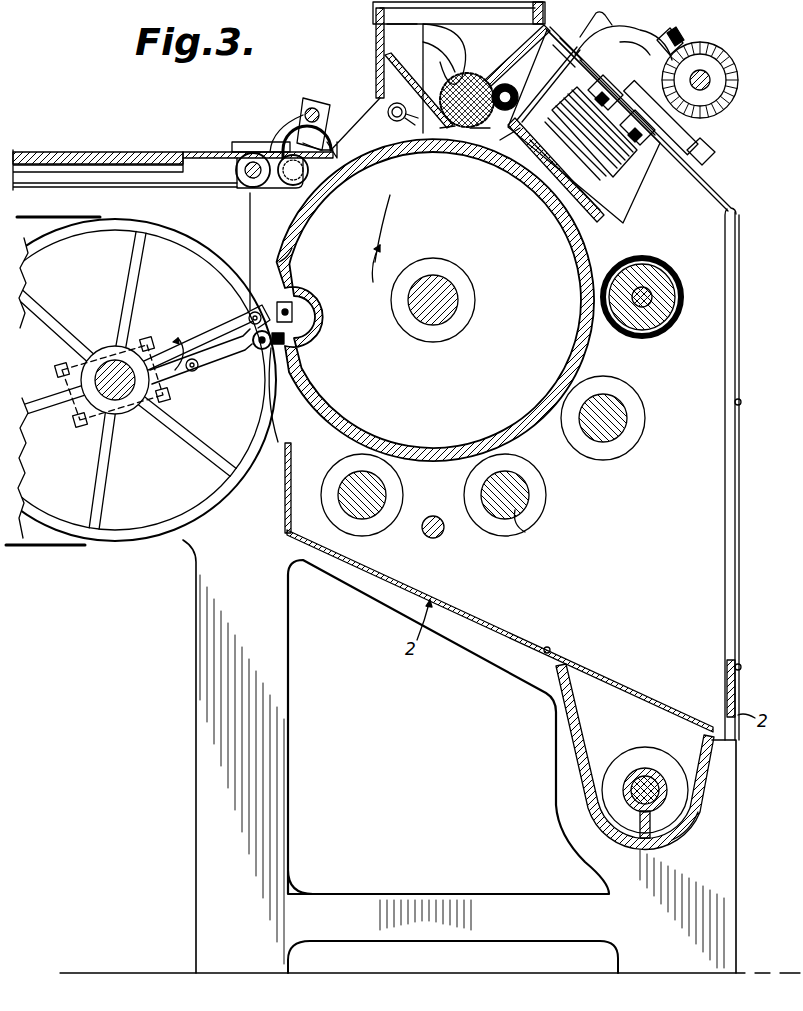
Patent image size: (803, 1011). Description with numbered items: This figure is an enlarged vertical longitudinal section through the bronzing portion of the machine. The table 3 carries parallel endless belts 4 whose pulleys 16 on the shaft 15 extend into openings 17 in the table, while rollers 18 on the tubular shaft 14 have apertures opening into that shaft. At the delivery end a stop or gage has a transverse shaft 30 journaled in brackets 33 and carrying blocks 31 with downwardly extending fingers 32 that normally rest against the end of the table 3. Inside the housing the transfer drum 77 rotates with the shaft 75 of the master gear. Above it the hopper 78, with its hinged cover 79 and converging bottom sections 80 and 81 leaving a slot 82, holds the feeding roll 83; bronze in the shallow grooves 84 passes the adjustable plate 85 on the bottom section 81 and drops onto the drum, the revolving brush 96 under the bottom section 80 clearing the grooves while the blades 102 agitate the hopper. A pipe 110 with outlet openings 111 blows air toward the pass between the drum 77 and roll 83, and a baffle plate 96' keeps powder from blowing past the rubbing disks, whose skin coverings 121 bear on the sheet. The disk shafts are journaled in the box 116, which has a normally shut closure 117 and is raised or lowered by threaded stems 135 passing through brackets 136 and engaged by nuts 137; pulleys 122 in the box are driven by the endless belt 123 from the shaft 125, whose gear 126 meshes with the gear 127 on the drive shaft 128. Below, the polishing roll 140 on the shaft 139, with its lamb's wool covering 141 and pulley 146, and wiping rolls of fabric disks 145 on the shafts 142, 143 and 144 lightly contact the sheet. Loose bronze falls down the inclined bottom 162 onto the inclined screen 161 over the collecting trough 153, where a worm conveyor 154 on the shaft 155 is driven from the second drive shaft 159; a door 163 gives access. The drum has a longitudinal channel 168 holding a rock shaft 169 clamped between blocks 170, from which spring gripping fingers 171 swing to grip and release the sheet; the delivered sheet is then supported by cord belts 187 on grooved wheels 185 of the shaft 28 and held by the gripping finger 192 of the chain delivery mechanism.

The table 3 is at (50, 152).
The endless belts 4 is at (88, 187).
The openings 17 is at (235, 148).
The tubular shaft 14 is at (285, 156).
The brackets 33 is at (285, 133).
The transverse shaft 30 is at (308, 110).
The blocks 31 is at (320, 97).
The fingers 32 is at (340, 128).
The shaft 15 is at (240, 172).
The pulleys 16 is at (250, 182).
The rollers 18 is at (285, 188).
The endless belts 187 is at (40, 217).
The shaft 28 is at (122, 350).
The gripping finger 192 is at (252, 340).
The wheels 185 is at (205, 520).
The spring gripping finger 171 is at (283, 392).
The blocks 170 is at (300, 278).
The rock shaft 169 is at (300, 305).
The longitudinal channel 168 is at (310, 330).
The pipe 110 is at (390, 150).
The outlet openings 111 is at (400, 125).
The feeding roll 83 is at (452, 140).
The grooves 84 is at (480, 140).
The baffle plate 96' is at (499, 170).
The coverings 121 is at (575, 200).
The hinged cover 79 is at (373, 12).
The plate 85 is at (376, 47).
The bottom section 81 is at (388, 70).
The slot 82 is at (478, 72).
The hopper 78 is at (517, 52).
The blades 102 is at (426, 78).
The bottom section 80 is at (560, 52).
The revolving brush 96 is at (515, 84).
The endless belt 123 is at (594, 87).
The closure 117 is at (600, 45).
The brackets 136 is at (645, 30).
The nuts 137 is at (675, 30).
The threaded stems 135 is at (685, 42).
The drive shaft 128 is at (708, 72).
The gear 127 is at (740, 72).
The gear 126 is at (705, 124).
The shaft 125 is at (716, 156).
The pulleys 122 is at (640, 178).
The box 116 is at (640, 200).
The shaft 139 is at (672, 280).
The polishing roll 140 is at (665, 315).
The covering 141 is at (632, 340).
The shaft 75 is at (476, 292).
The transfer drum 77 is at (508, 440).
The pulley 146 is at (640, 425).
The shaft 142 is at (625, 435).
The shaft 144 is at (390, 485).
The fabric disks 145 is at (548, 491).
The second drive shaft 159 is at (446, 530).
The shaft 143 is at (528, 532).
The inclined bottom 162 is at (362, 572).
The inclined screen 161 is at (625, 680).
The collecting trough 153 is at (575, 746).
The shaft 155 is at (645, 770).
The worm conveyor 154 is at (672, 830).
The door 163 is at (740, 575).